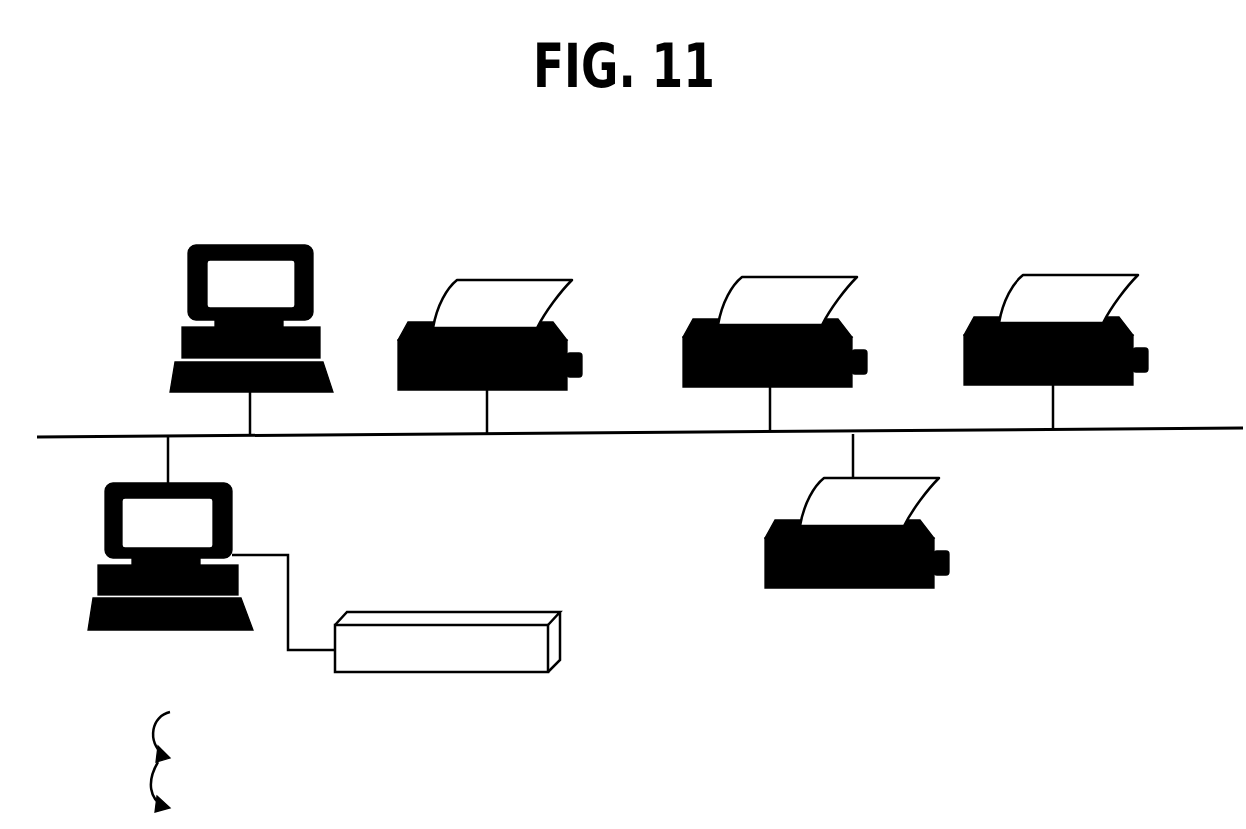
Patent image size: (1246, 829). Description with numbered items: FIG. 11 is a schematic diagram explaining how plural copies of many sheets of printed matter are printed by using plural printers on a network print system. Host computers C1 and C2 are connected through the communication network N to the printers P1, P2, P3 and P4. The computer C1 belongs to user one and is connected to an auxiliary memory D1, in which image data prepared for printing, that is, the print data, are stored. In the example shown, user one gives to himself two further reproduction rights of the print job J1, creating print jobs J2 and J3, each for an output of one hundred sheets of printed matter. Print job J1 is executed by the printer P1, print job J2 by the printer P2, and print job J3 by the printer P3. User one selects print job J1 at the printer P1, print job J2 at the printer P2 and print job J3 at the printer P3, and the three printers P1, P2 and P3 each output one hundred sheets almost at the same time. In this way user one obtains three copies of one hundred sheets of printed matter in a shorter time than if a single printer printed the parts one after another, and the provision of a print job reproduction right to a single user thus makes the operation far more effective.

The communication network N is at (640, 413).
The computer C1 is at (187, 483).
The computer C2 is at (230, 245).
The auxiliary memory D1 is at (403, 612).
The printer P1 is at (487, 276).
The printer P2 is at (770, 276).
The printer P3 is at (1052, 275).
The printer P4 is at (878, 478).
The print job J1 is at (376, 455).
The print job J2 is at (517, 478).
The print job J3 is at (658, 502).